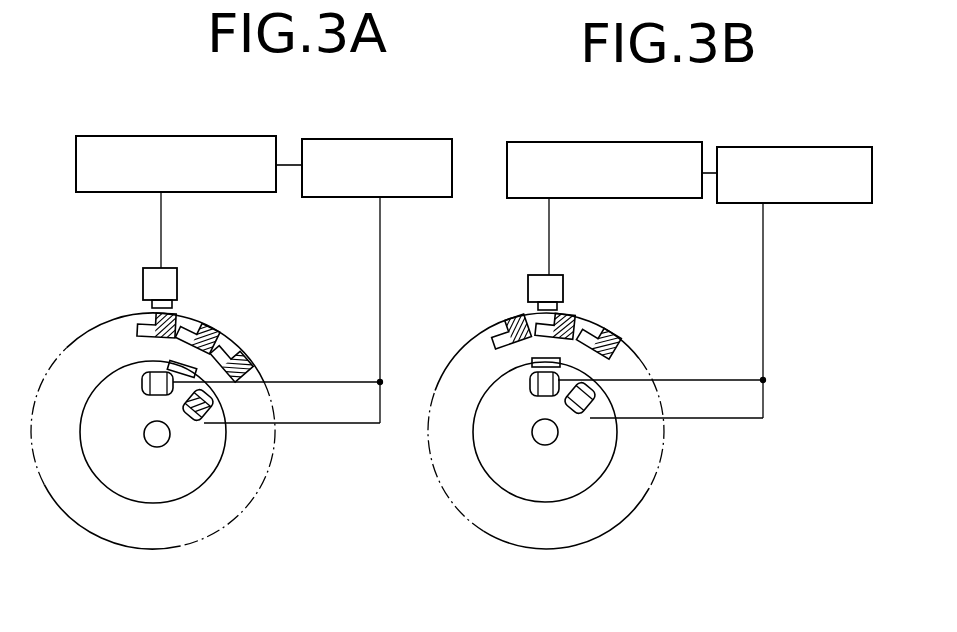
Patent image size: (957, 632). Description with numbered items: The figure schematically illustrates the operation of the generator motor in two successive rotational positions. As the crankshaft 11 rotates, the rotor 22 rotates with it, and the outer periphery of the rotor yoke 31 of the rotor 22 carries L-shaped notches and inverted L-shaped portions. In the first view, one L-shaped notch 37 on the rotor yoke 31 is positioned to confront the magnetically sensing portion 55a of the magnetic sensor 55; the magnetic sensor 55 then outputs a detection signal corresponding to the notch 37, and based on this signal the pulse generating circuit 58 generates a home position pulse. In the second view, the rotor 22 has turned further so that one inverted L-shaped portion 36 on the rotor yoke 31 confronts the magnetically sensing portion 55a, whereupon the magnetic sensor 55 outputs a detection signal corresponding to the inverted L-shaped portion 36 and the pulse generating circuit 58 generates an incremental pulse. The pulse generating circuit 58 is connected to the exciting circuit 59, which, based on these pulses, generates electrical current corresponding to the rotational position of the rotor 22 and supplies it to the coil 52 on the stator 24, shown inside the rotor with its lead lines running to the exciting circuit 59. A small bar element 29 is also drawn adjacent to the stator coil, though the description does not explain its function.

In FIG. 3A, the crankshaft 11 is at (157, 447).
In FIG. 3A, the rotor 22 is at (68, 522).
In FIG. 3B, the rotor 22 is at (490, 538).
In FIG. 3A, the stator 24 is at (187, 425).
In FIG. 3B, the stator 24 is at (570, 415).
In FIG. 3A, the magnetic piece 29 is at (200, 366).
In FIG. 3A, the rotor yoke 31 is at (175, 527).
In FIG. 3B, the rotor yoke 31 is at (536, 524).
In FIG. 3B, the inverted L-shaped portion 36 is at (560, 314).
In FIG. 3A, the L-shaped notch 37 is at (163, 320).
In FIG. 3A, the coil 52 is at (200, 418).
In FIG. 3B, the coil 52 is at (585, 413).
In FIG. 3A, the magnetic sensor 55 is at (143, 280).
In FIG. 3B, the magnetic sensor 55 is at (528, 273).
In FIG. 3A, the magnetically sensing portion 55a is at (152, 310).
In FIG. 3B, the magnetically sensing portion 55a is at (540, 310).
In FIG. 3A, the pulse generating circuit 58 is at (172, 136).
In FIG. 3B, the pulse generating circuit 58 is at (603, 142).
In FIG. 3A, the exciting circuit 59 is at (353, 140).
In FIG. 3B, the exciting circuit 59 is at (783, 146).